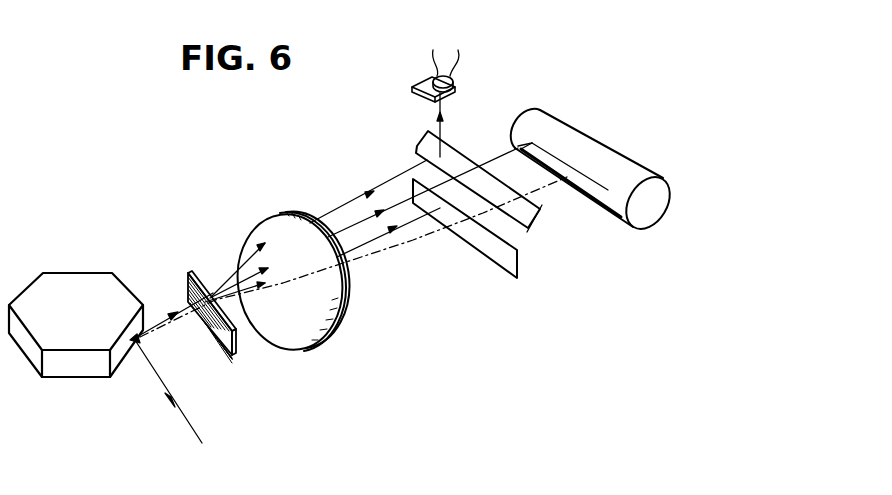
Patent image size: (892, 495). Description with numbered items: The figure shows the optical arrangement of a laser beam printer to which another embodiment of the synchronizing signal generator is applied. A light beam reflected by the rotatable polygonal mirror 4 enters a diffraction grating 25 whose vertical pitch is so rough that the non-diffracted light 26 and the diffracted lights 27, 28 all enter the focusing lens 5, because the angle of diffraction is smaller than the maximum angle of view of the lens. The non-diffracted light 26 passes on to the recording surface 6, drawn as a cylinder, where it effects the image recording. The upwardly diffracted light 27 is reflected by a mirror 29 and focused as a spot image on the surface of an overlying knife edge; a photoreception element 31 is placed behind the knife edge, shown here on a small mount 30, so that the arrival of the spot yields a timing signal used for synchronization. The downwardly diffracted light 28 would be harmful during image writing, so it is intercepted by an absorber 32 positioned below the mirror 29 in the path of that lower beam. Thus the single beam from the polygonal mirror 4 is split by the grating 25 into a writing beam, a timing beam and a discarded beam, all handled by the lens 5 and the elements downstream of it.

The rotatable polygonal mirror 4 is at (85, 283).
The diffraction grating 25 is at (221, 344).
The non-diffracted light 26 is at (232, 275).
The diffracted light 27 is at (252, 235).
The downwardly diffracted light 28 is at (241, 292).
The focusing lens 5 is at (326, 305).
The mirror 29 is at (537, 213).
The detector mount 30 is at (421, 92).
The photoreception element 31 is at (452, 78).
The absorber 32 is at (492, 249).
The recording surface 6 is at (623, 220).